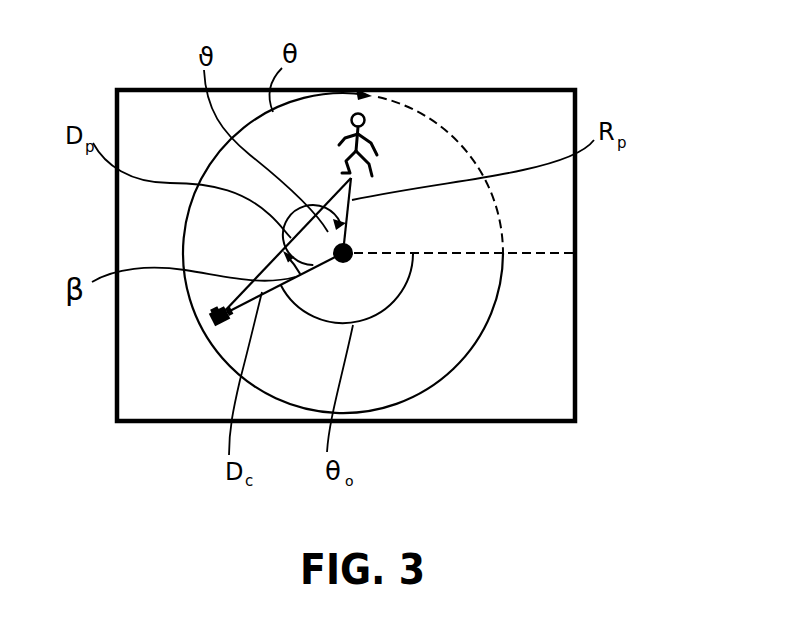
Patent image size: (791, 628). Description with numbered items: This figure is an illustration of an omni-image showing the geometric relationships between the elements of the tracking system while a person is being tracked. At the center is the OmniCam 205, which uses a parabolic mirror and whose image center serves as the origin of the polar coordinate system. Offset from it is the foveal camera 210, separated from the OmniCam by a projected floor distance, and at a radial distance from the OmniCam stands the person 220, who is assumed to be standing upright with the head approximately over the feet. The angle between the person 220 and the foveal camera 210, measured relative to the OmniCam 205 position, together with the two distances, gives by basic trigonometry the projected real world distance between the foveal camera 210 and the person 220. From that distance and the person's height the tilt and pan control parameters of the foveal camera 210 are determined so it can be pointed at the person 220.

The OmniCam 205 is at (347, 262).
The foveal camera 210 is at (214, 320).
The person 220 is at (370, 117).